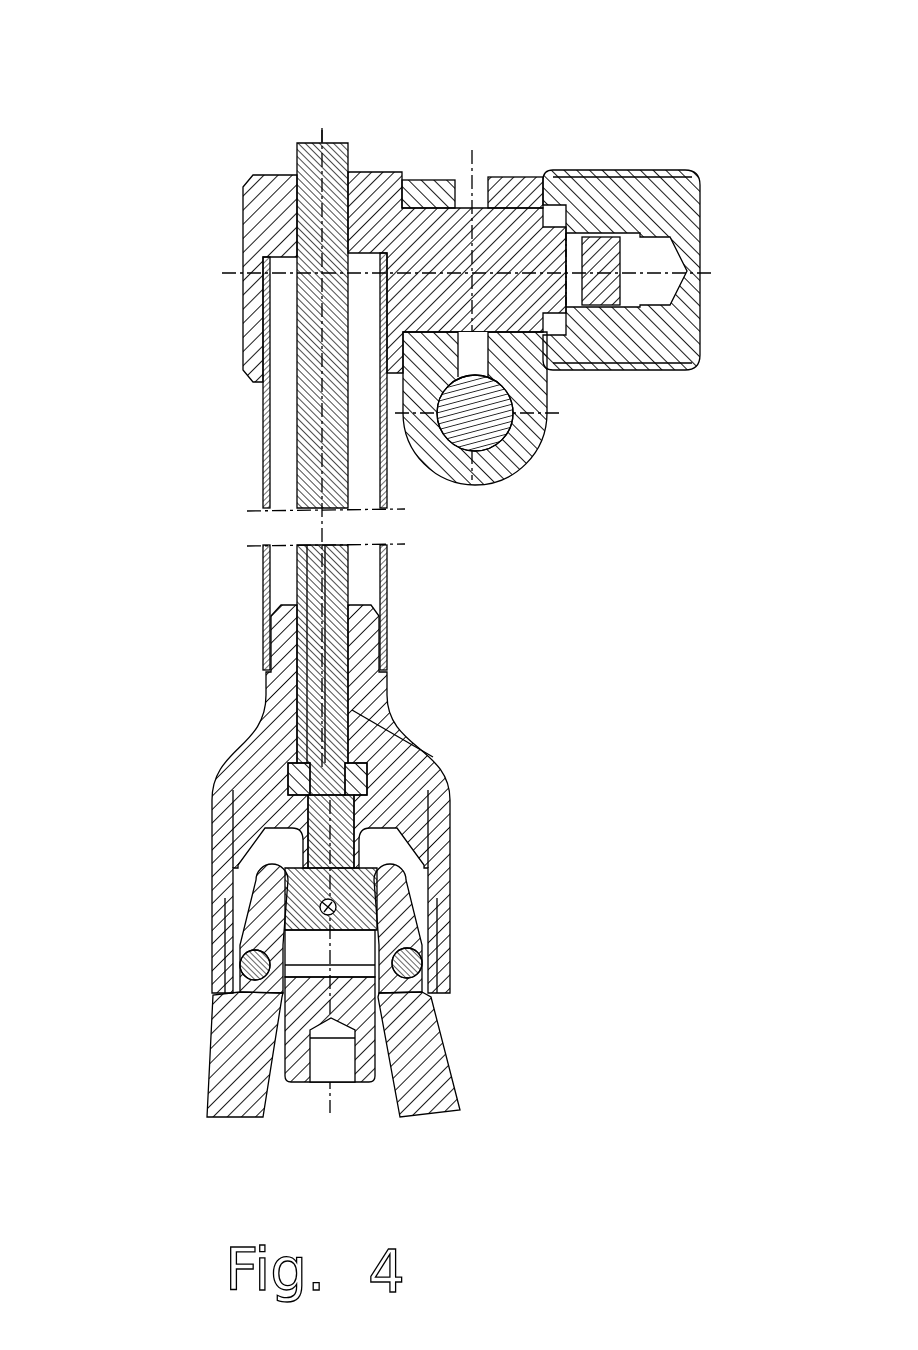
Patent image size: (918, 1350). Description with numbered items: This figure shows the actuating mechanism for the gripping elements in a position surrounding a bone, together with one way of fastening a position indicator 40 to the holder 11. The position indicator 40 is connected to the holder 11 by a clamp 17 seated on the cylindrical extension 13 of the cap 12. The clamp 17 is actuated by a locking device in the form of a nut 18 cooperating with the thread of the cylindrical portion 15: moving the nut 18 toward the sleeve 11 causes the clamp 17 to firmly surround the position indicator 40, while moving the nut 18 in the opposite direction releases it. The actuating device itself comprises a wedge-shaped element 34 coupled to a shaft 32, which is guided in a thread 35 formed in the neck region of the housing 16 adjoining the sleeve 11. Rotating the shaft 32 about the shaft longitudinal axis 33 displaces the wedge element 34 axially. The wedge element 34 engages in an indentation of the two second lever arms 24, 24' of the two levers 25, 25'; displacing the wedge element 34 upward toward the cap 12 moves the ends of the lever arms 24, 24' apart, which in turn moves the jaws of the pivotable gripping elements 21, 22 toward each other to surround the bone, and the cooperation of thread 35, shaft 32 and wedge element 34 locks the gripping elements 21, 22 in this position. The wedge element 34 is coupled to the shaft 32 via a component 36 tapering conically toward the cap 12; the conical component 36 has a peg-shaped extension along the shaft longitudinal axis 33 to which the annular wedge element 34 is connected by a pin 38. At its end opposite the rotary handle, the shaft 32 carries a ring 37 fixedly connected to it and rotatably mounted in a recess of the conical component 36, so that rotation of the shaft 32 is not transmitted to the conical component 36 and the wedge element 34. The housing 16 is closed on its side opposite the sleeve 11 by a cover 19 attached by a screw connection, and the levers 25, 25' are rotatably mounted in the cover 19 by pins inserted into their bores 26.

The holder 11 is at (267, 407).
The cap 12 is at (260, 215).
The cylindrical extension 13 is at (505, 308).
The cylindrical portion 15 is at (605, 292).
The housing 16 is at (277, 700).
The clamp 17 is at (500, 467).
The nut 18 is at (622, 200).
The cover 19 is at (345, 997).
The pivotable gripping element 21 is at (248, 1092).
The pivotable gripping element 22 is at (427, 1078).
The second lever arm 24 is at (495, 928).
The second lever arm 24' is at (197, 928).
The lever 25 is at (578, 1030).
The lever 25' is at (126, 1006).
The bore 26 is at (250, 971).
The shaft 32 is at (308, 158).
The shaft longitudinal axis 33 is at (317, 125).
The wedge-shaped element 34 is at (363, 885).
The thread 35 is at (350, 677).
The conical component 36 is at (402, 809).
The ring 37 is at (358, 777).
The pin 38 is at (332, 913).
The position indicator 40 is at (478, 428).